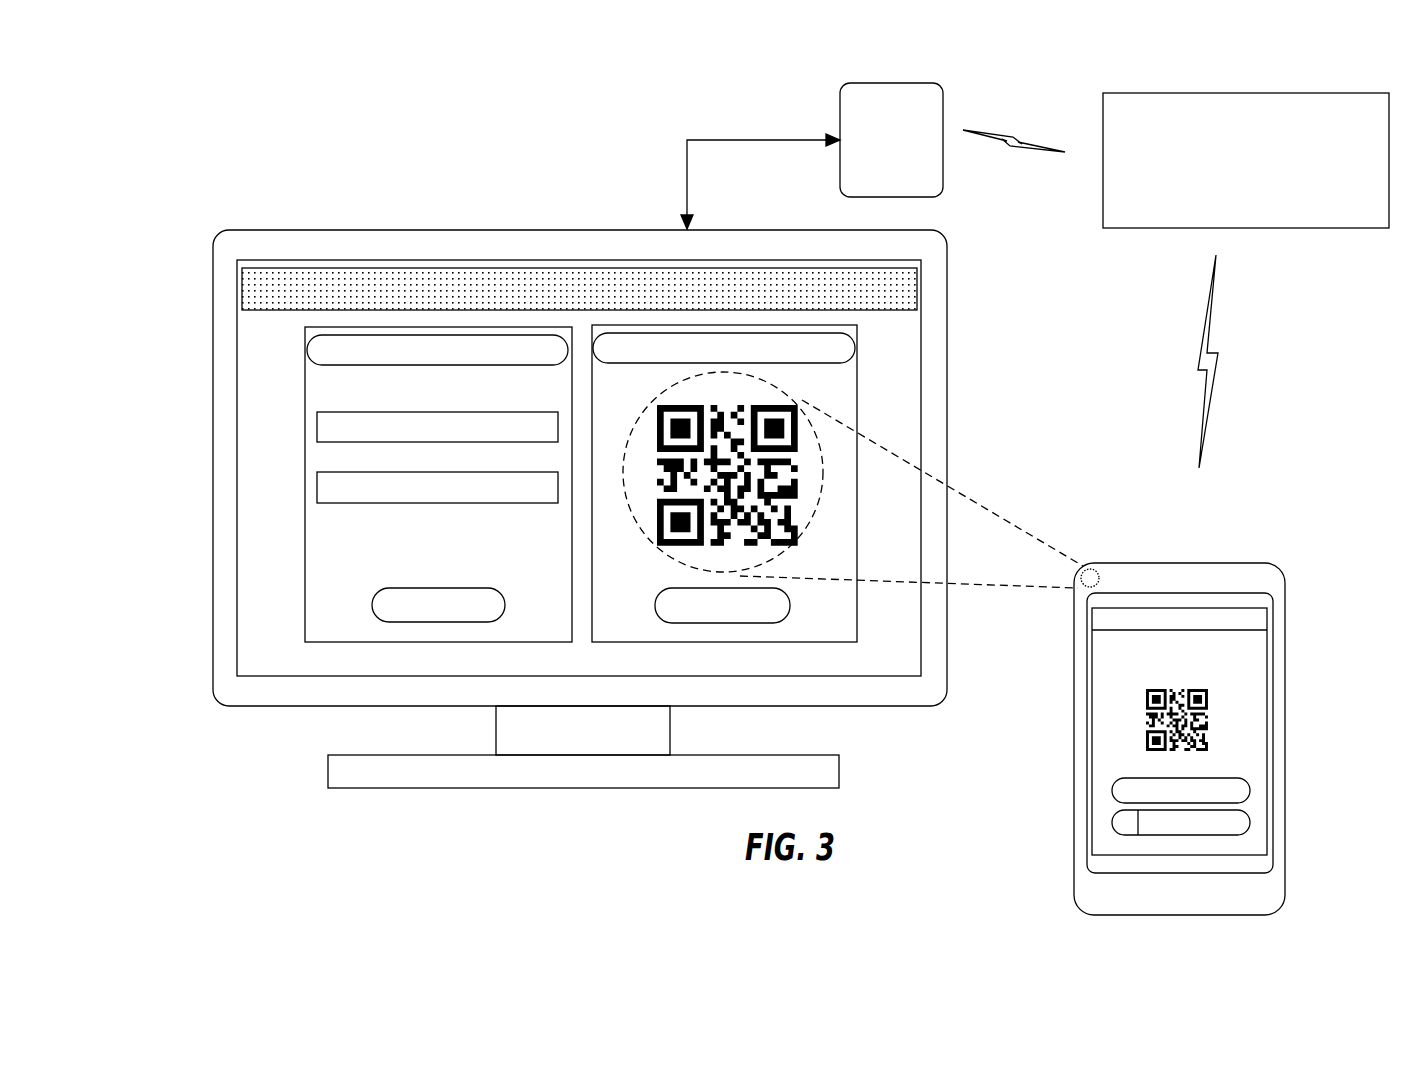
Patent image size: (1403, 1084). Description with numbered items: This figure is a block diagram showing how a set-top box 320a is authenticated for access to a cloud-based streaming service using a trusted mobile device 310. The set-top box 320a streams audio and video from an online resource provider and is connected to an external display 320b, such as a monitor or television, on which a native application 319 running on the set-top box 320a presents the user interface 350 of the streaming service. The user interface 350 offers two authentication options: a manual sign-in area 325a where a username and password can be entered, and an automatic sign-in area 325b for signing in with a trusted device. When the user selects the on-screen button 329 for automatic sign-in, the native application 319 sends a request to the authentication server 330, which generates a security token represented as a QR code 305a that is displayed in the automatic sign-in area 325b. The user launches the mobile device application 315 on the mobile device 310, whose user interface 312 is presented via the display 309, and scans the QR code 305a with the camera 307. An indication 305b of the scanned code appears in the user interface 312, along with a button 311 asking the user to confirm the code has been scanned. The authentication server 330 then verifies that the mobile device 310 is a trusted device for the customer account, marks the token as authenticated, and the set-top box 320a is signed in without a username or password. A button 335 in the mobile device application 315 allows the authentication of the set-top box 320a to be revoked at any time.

The QR code 305a is at (723, 472).
The indication of the QR code 305b is at (1208, 702).
The camera 307 is at (1100, 578).
The display 309 is at (1262, 863).
The mobile device 310 is at (1235, 900).
The button 311 is at (1240, 790).
The user interface 312 is at (1238, 737).
The mobile device application 315 is at (1235, 627).
The native application 319 is at (270, 563).
The set-top box 320a is at (875, 161).
The external display 320b is at (568, 748).
The manual sign-in area 325a is at (327, 387).
The automatic sign-in area 325b is at (835, 387).
The on-screen button 329 is at (818, 335).
The authentication server 330 is at (1233, 180).
The button 335 is at (1242, 820).
The user interface 350 is at (498, 282).